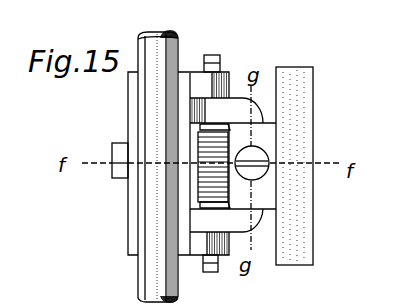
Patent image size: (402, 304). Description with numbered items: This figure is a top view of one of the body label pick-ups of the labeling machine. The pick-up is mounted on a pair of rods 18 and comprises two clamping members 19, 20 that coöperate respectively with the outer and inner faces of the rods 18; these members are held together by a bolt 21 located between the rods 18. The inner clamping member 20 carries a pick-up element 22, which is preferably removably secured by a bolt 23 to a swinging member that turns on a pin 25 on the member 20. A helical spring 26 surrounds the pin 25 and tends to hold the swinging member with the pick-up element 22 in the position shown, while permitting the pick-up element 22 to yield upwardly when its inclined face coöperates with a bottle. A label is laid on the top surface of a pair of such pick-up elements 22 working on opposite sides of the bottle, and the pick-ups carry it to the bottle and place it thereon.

The rods 18 is at (173, 52).
The clamping member 19 is at (133, 79).
The clamping member 20 is at (183, 73).
The bolt 21 is at (117, 170).
The pick-up element 22 is at (302, 93).
The bolt 23 is at (262, 150).
The pin 25 is at (204, 272).
The helical spring 26 is at (206, 170).